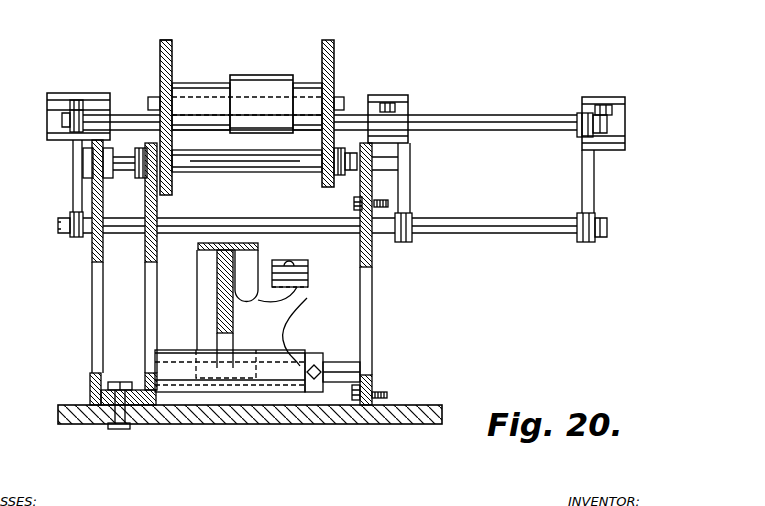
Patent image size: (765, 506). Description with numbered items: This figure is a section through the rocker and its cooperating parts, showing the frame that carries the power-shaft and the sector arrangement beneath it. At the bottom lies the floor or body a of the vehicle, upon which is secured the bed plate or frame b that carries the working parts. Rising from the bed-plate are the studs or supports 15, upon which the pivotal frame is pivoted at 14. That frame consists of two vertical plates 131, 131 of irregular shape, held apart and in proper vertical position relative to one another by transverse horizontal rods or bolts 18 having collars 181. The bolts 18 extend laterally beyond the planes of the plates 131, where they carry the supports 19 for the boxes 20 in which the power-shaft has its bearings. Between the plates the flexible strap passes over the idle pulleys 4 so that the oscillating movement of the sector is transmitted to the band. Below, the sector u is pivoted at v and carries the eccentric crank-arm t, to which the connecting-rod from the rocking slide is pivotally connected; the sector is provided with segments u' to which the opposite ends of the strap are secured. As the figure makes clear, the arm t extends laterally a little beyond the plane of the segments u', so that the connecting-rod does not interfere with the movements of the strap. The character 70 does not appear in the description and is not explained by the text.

The idle pulley 4 is at (265, 75).
The pivot 14 is at (83, 177).
The stud or support 15 is at (150, 291).
The transverse horizontal rod or bolt 18 is at (58, 226).
The support 19 is at (72, 193).
The box 20 is at (99, 95).
The plate 70 is at (165, 30).
The vertical plate 131 is at (175, 58).
The collar 181 is at (125, 113).
The floor or body a is at (251, 419).
The bed plate or frame b is at (111, 396).
The eccentric crank-arm t is at (295, 300).
The sector u is at (241, 341).
The segment u' is at (211, 293).
The pivot v is at (291, 362).